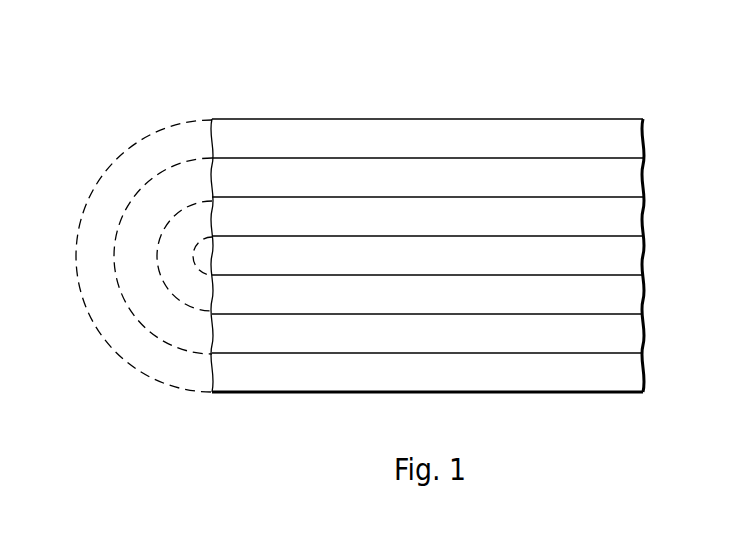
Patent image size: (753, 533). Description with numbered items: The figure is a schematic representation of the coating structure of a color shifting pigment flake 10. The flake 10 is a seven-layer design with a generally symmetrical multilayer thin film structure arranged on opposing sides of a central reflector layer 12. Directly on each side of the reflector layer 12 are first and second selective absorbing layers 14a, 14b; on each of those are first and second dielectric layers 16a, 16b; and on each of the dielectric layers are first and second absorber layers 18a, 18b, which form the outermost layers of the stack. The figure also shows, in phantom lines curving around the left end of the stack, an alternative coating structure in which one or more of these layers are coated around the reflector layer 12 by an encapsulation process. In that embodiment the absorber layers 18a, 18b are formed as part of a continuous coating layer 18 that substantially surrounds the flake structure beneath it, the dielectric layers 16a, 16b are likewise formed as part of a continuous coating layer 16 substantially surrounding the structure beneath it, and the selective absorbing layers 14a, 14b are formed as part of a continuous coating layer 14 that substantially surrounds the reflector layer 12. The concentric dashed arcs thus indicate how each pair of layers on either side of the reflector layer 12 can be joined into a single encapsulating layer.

The pigment flake 10 is at (289, 82).
The reflector layer 12 is at (627, 261).
The continuous coating layer 14 is at (182, 207).
The first selective absorbing layer 14a is at (627, 222).
The second selective absorbing layer 14b is at (627, 300).
The continuous coating layer 16 is at (128, 203).
The first dielectric layer 16a is at (627, 183).
The second dielectric layer 16b is at (627, 339).
The continuous coating layer 18 is at (100, 338).
The first absorber layer 18a is at (627, 144).
The second absorber layer 18b is at (627, 378).